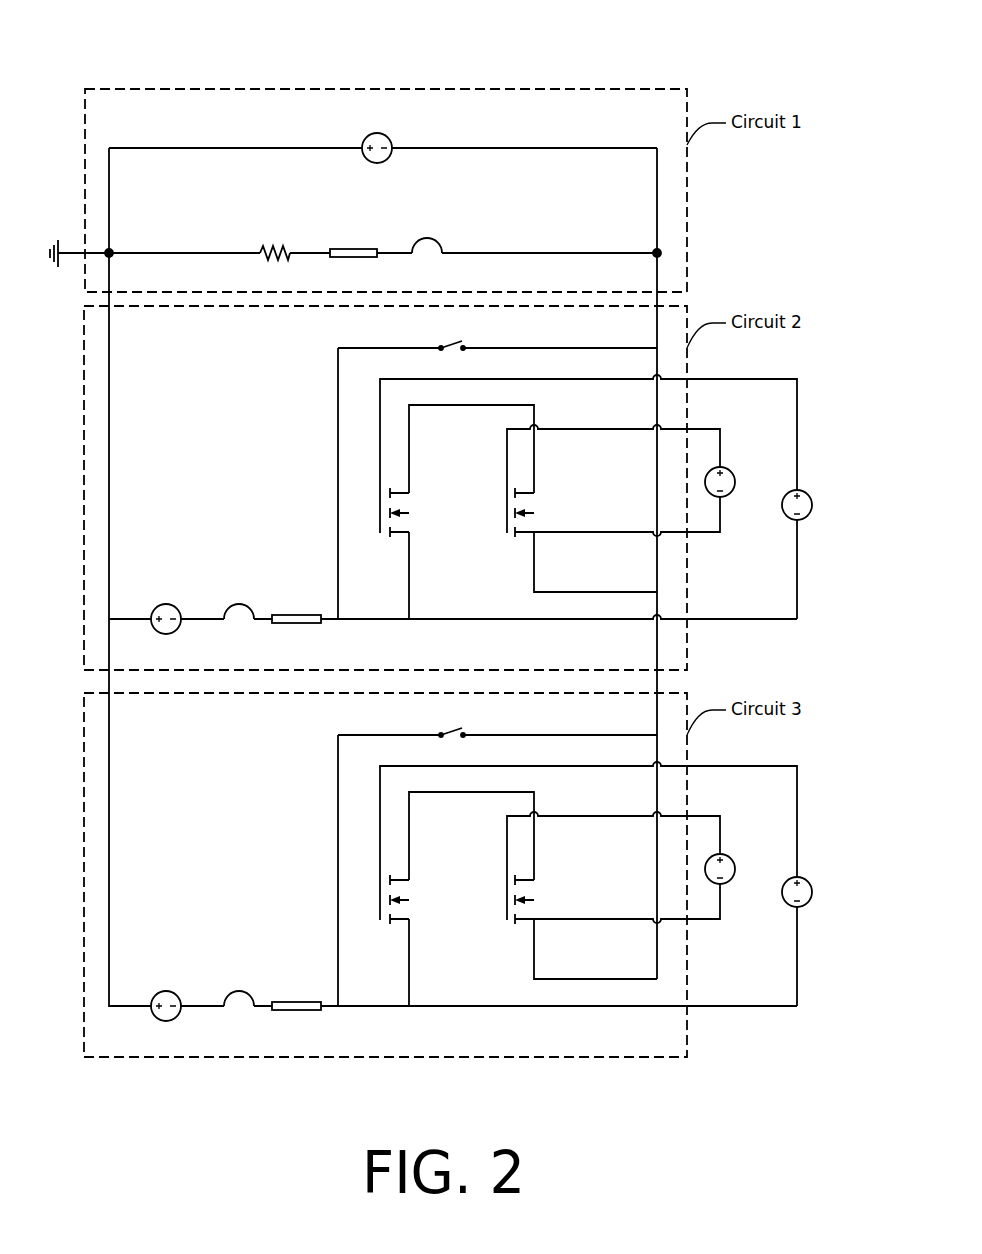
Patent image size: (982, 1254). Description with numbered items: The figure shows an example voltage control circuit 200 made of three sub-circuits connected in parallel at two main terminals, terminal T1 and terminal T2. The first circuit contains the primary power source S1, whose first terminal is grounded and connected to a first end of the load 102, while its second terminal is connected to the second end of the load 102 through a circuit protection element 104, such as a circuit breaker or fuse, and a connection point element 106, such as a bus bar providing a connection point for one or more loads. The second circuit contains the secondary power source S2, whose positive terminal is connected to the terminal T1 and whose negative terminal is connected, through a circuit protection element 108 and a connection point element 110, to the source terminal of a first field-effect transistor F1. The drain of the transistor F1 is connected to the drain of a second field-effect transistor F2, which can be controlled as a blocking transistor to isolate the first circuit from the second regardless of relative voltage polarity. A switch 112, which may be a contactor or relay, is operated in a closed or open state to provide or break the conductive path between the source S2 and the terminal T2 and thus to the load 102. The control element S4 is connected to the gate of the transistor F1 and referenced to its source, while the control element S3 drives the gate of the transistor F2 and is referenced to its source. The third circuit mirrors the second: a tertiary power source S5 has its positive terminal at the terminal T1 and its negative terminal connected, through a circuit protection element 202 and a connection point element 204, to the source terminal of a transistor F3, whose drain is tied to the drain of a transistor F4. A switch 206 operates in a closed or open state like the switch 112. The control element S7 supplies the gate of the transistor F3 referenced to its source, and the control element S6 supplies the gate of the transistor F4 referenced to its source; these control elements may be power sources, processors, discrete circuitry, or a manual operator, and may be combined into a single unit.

The voltage control circuit 200 is at (718, 36).
The load 102 is at (273, 240).
The circuit protection element 104 is at (432, 231).
The connection point element 106 is at (345, 245).
The circuit protection element 108 is at (233, 590).
The connection point element 110 is at (306, 611).
The switch 112 is at (440, 343).
The circuit protection element 202 is at (217, 973).
The connection point element 204 is at (287, 988).
The switch 206 is at (497, 719).
The terminal T1 is at (113, 248).
The terminal T2 is at (652, 247).
The primary power source S1 is at (377, 136).
The secondary power source S2 is at (166, 630).
The control element S3 is at (733, 482).
The control element S4 is at (810, 505).
The tertiary power source S5 is at (166, 1017).
The control element S6 is at (733, 869).
The control element S7 is at (810, 892).
The first field-effect transistor F1 is at (416, 510).
The second field-effect transistor F2 is at (542, 510).
The field-effect transistor F3 is at (416, 897).
The field-effect transistor F4 is at (542, 897).